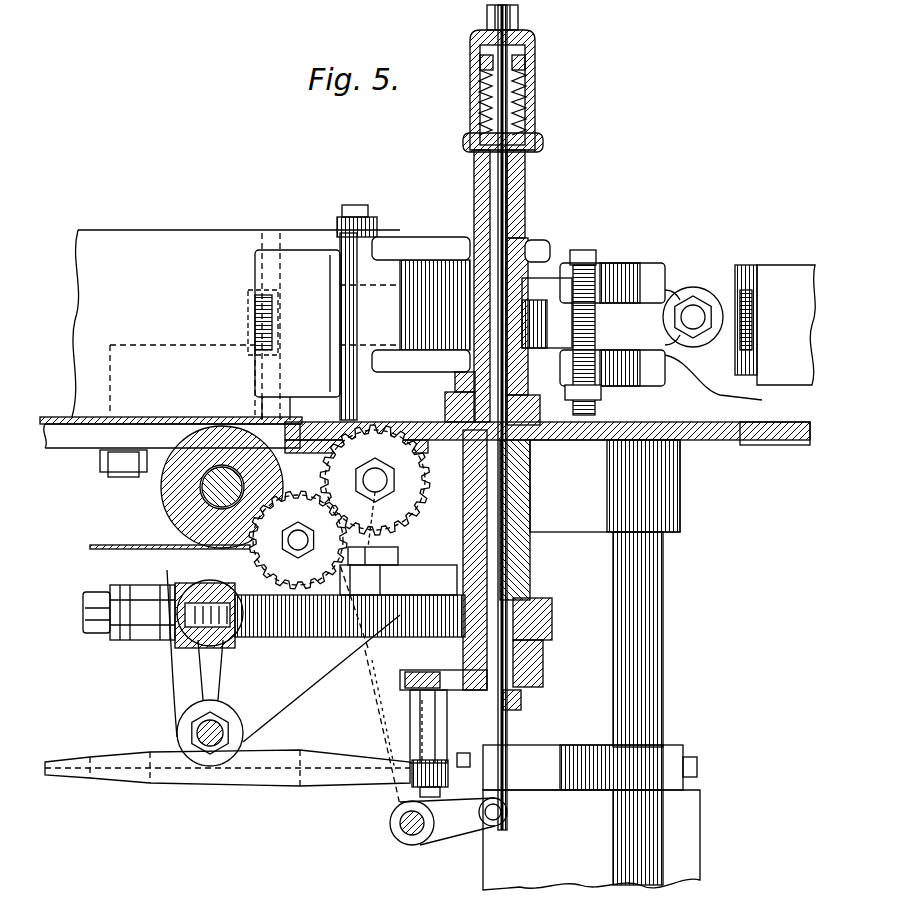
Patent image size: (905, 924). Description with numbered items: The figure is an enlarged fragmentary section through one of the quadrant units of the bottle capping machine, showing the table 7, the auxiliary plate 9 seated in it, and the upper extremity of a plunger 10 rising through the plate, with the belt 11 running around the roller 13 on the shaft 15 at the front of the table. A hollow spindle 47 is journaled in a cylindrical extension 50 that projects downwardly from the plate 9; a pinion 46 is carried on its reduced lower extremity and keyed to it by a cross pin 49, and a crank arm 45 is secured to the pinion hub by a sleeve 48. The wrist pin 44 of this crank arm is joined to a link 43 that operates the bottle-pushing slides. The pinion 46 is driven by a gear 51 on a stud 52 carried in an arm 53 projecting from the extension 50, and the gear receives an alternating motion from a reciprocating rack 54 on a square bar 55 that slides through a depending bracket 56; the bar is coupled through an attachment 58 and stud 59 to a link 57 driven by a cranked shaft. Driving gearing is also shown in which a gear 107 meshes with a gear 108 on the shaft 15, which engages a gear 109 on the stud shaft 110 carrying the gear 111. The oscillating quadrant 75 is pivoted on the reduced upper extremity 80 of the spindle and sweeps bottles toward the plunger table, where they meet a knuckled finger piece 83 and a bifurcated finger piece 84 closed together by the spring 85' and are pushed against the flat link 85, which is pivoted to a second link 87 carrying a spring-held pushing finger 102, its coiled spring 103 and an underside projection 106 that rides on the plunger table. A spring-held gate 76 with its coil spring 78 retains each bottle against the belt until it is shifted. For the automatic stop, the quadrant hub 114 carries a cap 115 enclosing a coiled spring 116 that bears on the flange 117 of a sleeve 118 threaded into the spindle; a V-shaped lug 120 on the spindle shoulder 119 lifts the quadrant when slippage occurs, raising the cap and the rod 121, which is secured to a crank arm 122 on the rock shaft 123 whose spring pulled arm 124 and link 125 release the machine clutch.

The table 7 is at (758, 445).
The auxiliary table or plate 9 is at (690, 432).
The plunger 10 is at (665, 685).
The belt 11 is at (160, 420).
The roller 13 is at (180, 440).
The shaft 15 is at (180, 512).
The link 43 is at (345, 782).
The wrist pin 44 is at (425, 722).
The crank arm 45 is at (448, 692).
The pinion 46 is at (535, 600).
The hollow spindle 47 is at (520, 555).
The sleeve 48 is at (545, 665).
The cross pin 49 is at (510, 698).
The cylindrical extension 50 is at (530, 495).
The gear 51 is at (322, 632).
The stud 52 is at (400, 556).
The arm 53 is at (400, 585).
The reciprocating rack 54 is at (230, 622).
The square bar 55 is at (217, 642).
The bracket 56 is at (258, 702).
The link 57 is at (128, 652).
The attachment 58 is at (165, 640).
The stud 59 is at (85, 615).
The quadrant 75 is at (410, 245).
The gate 76 is at (298, 265).
The coil spring 78 is at (258, 312).
The reduced upper extremity 80 is at (506, 205).
The finger piece 83 is at (560, 330).
The finger piece 84 is at (655, 272).
The flat link 85 is at (693, 275).
The spring 85' is at (599, 321).
The second link 87 is at (792, 278).
The pushing finger 102 is at (740, 275).
The coiled spring 103 is at (750, 320).
The projection 106 is at (752, 400).
The gear 107 is at (332, 492).
The gear 108 is at (190, 592).
The gear 109 is at (395, 542).
The stud shaft 110 is at (380, 502).
The gear 111 is at (398, 488).
The hub 114 is at (482, 180).
The cap 115 is at (530, 105).
The coiled spring 116 is at (522, 112).
The flange 117 is at (483, 70).
The sleeve 118 is at (470, 140).
The shoulder 119 is at (460, 410).
The lug 120 is at (460, 386).
The rod 121 is at (522, 248).
The crank arm 122 is at (462, 830).
The rock shaft 123 is at (404, 836).
The spring pulled arm 124 is at (374, 708).
The link 125 is at (385, 662).